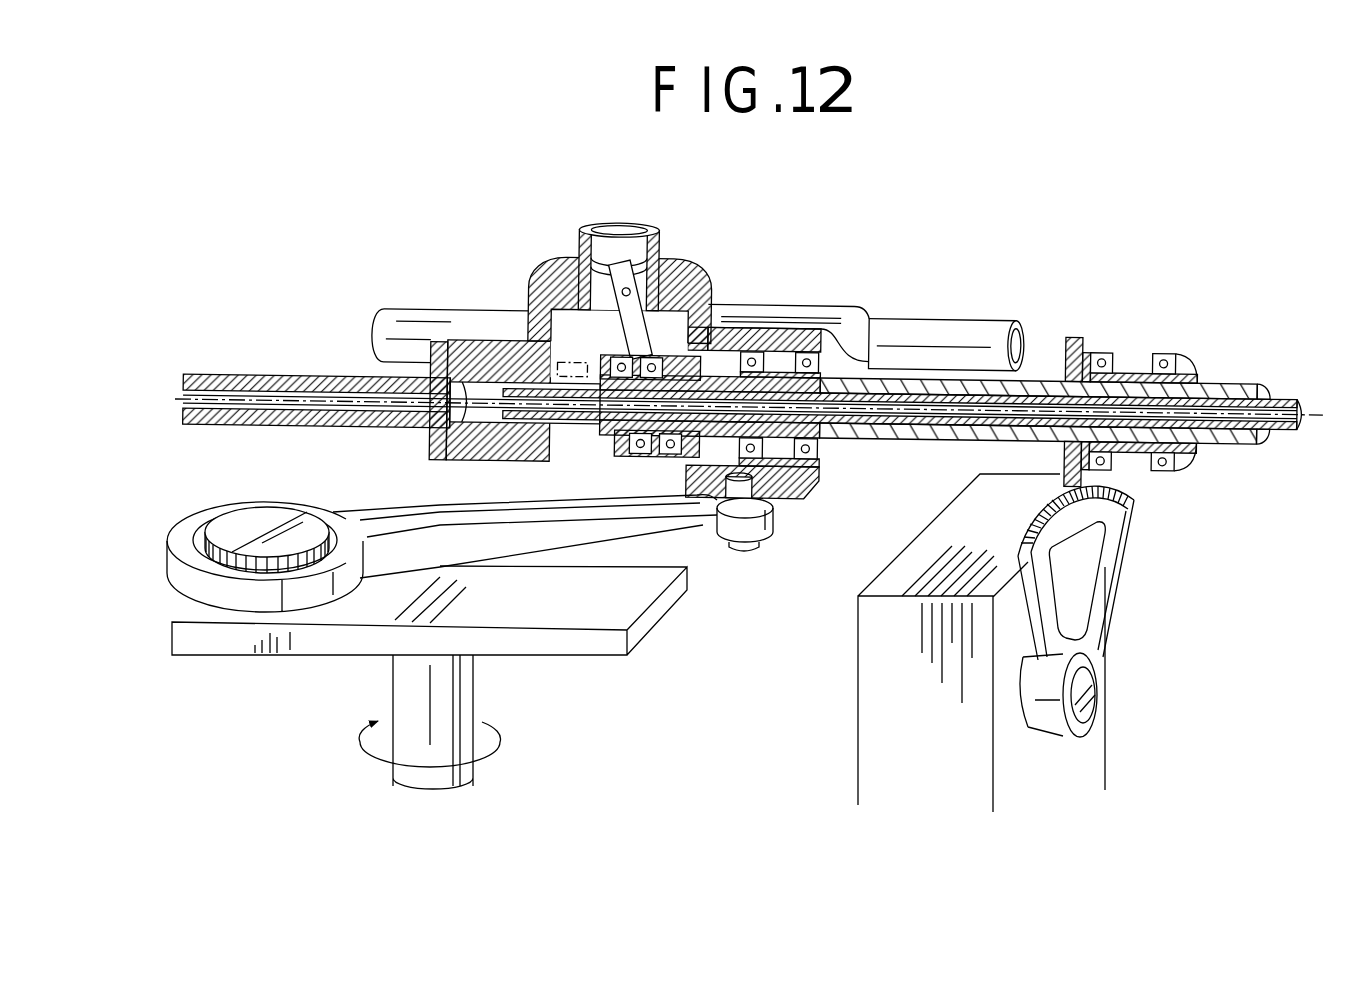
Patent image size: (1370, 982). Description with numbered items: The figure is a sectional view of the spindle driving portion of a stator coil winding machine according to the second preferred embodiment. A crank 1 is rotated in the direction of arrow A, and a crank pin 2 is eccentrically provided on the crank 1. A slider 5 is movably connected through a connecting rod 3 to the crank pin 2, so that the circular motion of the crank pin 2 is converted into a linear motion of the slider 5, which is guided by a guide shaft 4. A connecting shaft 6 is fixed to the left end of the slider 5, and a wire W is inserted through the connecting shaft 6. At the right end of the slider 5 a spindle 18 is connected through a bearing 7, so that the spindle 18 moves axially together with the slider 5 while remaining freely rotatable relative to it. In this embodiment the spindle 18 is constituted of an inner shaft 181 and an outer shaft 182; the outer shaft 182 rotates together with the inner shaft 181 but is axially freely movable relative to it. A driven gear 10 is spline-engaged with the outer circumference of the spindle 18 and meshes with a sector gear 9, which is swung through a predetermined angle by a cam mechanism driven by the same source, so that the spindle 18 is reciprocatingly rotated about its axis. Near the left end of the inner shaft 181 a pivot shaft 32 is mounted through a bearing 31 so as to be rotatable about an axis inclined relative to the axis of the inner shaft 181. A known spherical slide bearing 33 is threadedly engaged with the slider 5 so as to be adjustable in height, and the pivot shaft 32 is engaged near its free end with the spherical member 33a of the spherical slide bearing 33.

The crank 1 is at (555, 652).
The crank pin 2 is at (228, 525).
The connecting rod 3 is at (697, 527).
The guide shaft 4 is at (943, 318).
The slider 5 is at (487, 343).
The connecting shaft 6 is at (283, 373).
The bearing 7 is at (808, 492).
The sector gear 9 is at (1113, 558).
The driven gear 10 is at (1078, 336).
The spindle 18 is at (1315, 286).
The inner shaft 181 is at (1285, 400).
The outer shaft 182 is at (1225, 383).
The bearing 31 is at (630, 460).
The pivot shaft 32 is at (601, 255).
The spherical slide bearing 33 is at (663, 230).
The spherical member 33a is at (665, 260).
The wire W is at (340, 402).
The arrow A is at (425, 724).